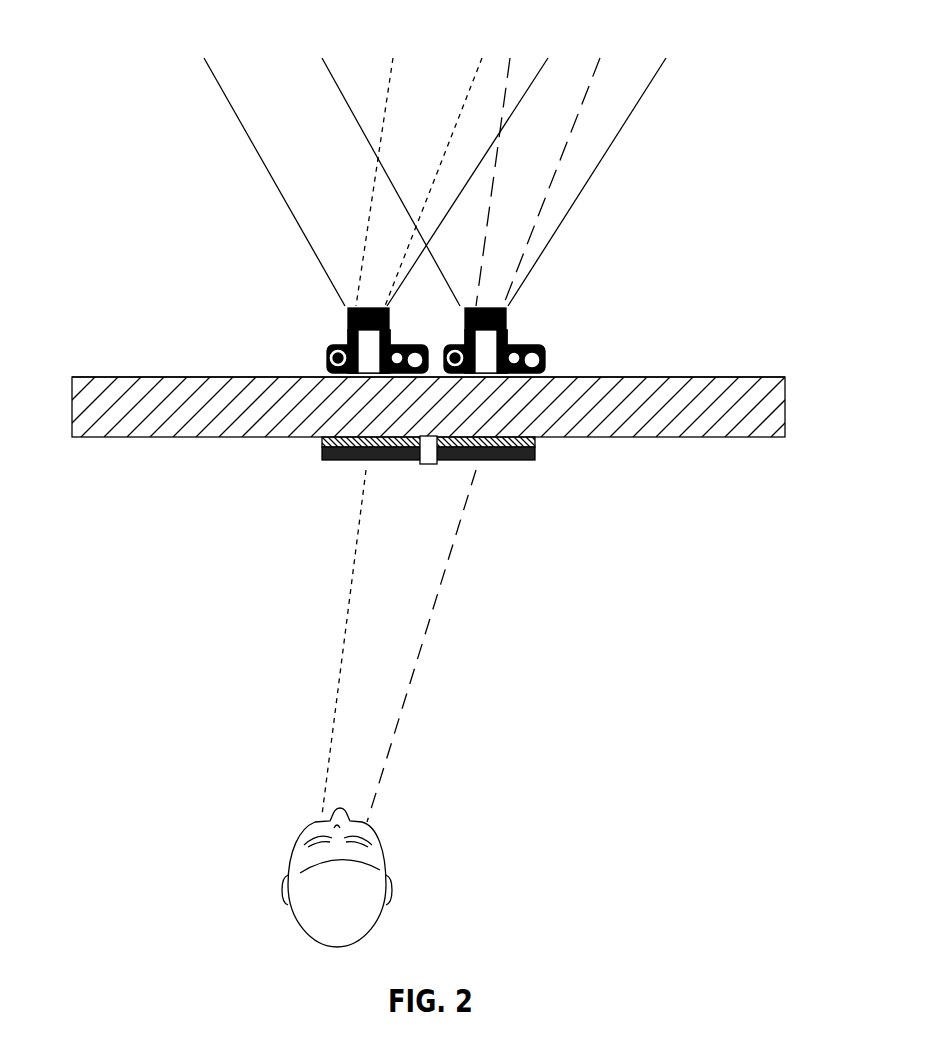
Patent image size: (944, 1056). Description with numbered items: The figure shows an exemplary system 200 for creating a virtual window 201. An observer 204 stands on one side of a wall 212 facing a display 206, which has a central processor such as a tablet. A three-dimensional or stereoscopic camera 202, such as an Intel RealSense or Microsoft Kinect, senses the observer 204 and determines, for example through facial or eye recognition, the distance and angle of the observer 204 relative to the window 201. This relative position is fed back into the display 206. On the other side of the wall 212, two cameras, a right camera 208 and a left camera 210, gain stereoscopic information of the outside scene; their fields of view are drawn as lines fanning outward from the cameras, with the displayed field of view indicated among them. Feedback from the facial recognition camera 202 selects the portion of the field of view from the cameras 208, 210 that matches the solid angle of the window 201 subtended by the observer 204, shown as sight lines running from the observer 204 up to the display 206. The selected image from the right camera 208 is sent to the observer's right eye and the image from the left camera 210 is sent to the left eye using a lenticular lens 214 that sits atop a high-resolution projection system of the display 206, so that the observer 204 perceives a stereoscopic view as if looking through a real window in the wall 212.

The system 200 is at (732, 80).
The virtual window 201 is at (436, 541).
The 3D camera or stereoscopic camera 202 is at (430, 470).
The observer 204 is at (272, 891).
The display 206 is at (317, 446).
The right camera 208 is at (565, 313).
The left camera 210 is at (314, 371).
The wall 212 is at (450, 420).
The lenticular lens 214 is at (539, 455).